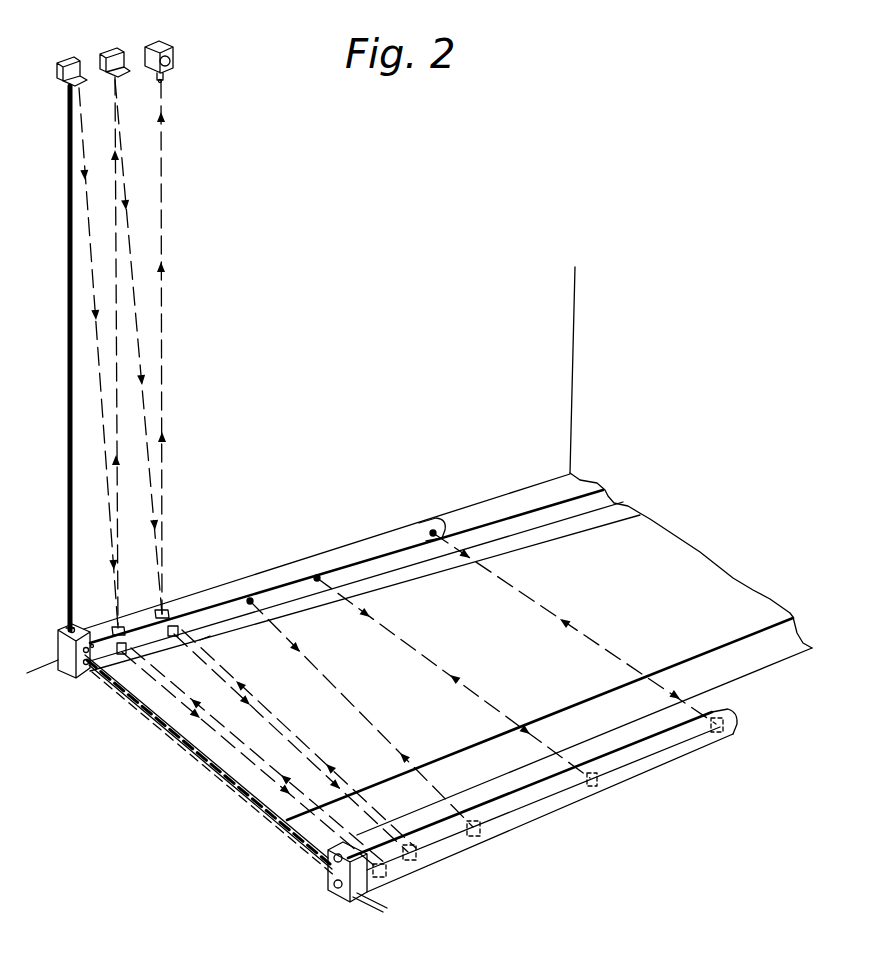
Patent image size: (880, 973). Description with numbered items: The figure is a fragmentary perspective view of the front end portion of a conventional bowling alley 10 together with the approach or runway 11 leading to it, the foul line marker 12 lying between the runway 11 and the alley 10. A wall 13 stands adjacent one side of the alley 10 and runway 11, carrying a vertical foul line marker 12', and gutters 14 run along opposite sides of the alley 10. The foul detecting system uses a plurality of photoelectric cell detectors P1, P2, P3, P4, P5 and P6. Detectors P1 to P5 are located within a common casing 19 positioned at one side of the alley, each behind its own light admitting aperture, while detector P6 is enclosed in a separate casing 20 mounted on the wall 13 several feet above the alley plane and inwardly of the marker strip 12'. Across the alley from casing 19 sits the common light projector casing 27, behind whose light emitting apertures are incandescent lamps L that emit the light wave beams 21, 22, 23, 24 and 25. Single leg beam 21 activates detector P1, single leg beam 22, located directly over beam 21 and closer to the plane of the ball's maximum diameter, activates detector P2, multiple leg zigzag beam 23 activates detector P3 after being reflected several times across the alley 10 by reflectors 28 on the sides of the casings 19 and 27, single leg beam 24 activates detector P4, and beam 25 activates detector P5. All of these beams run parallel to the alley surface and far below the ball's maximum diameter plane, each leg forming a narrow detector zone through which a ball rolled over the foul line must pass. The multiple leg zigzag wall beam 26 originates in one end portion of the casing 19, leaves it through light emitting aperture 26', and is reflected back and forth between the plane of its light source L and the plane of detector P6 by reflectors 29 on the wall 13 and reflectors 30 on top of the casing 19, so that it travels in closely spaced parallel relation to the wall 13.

The bowling alley 10 is at (549, 654).
The runway 11 is at (110, 813).
The foul line marker 12 is at (236, 783).
The vertical foul line marker 12' is at (49, 358).
The wall 13 is at (416, 362).
The gutters 14 is at (408, 648).
The casing 19 is at (375, 545).
The casing 20 is at (168, 43).
The light wave beam 21 is at (200, 766).
The light wave beam 22 is at (222, 782).
The zigzag light wave beam 23 is at (243, 706).
The light wave beam 24 is at (400, 637).
The light wave beam 25 is at (572, 614).
The zigzag light wave beam 26 is at (141, 352).
The light emitting aperture 26' is at (53, 610).
The light projector casing 27 is at (530, 808).
The reflectors 28 is at (176, 627).
The reflectors 29 is at (100, 50).
The reflectors 30 is at (119, 626).
The incandescent lamp L is at (58, 650).
The photo-electric cell detector P1 is at (71, 672).
The photo-electric cell detector P2 is at (92, 642).
The photo-electric cell detector P3 is at (251, 594).
The photo-electric cell detector P4 is at (318, 572).
The photo-electric cell detector P5 is at (438, 522).
The photo-electric cell detector P6 is at (175, 57).